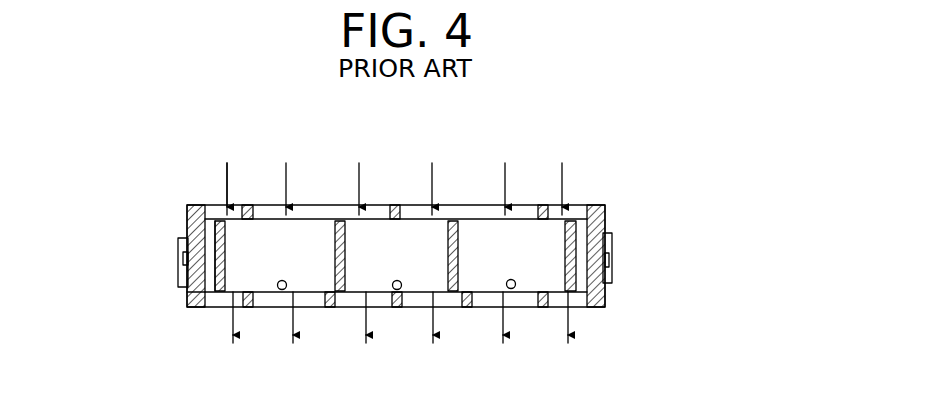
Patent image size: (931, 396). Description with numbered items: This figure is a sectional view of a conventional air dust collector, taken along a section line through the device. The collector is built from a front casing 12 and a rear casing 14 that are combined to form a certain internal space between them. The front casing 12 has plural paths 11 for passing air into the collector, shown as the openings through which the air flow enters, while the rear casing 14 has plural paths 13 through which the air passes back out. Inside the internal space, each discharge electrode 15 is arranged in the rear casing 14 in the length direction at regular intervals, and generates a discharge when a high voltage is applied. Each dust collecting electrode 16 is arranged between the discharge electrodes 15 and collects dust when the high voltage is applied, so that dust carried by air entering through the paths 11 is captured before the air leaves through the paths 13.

The paths 11 is at (218, 207).
The front casing 12 is at (180, 207).
The paths 13 is at (251, 307).
The rear casing 14 is at (178, 311).
The discharge electrode 15 is at (282, 290).
The dust collecting electrode 16 is at (227, 240).